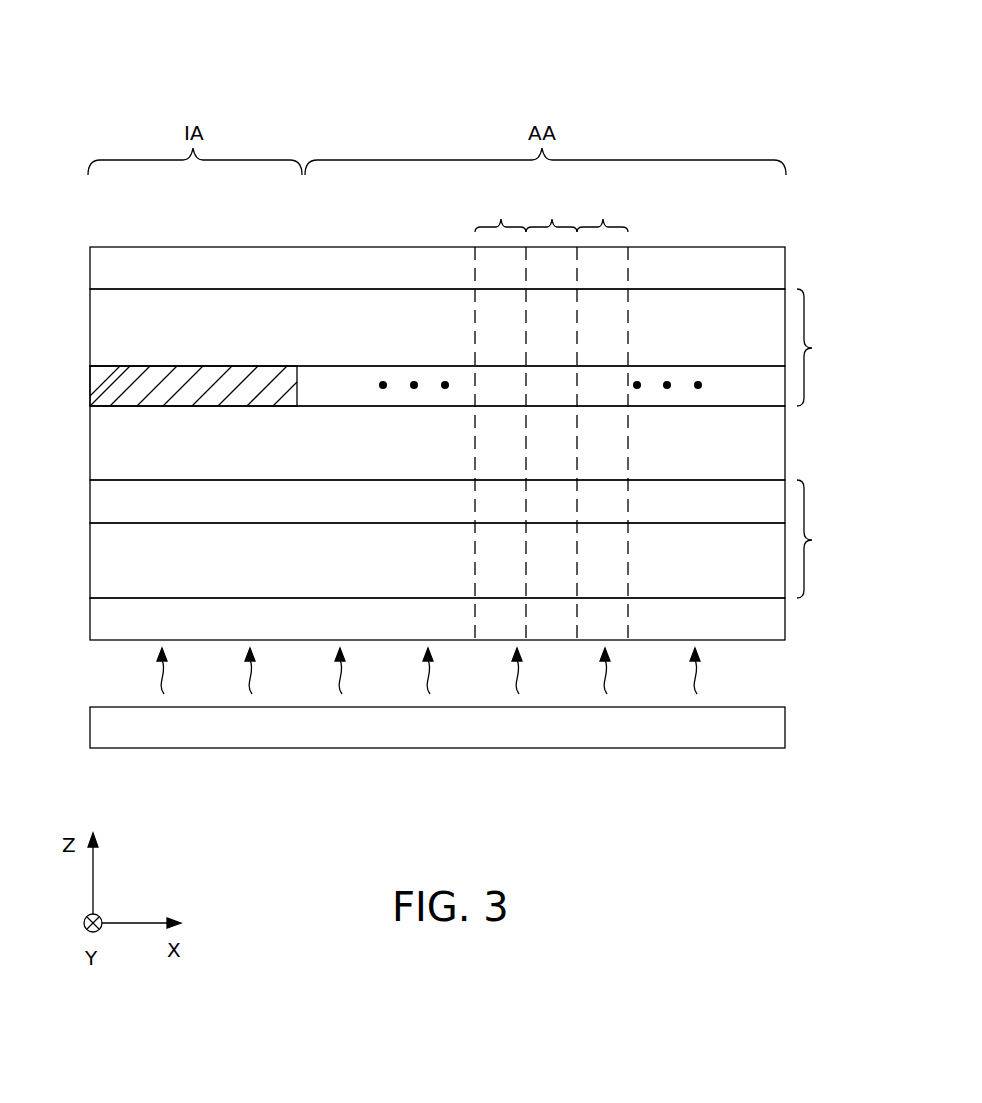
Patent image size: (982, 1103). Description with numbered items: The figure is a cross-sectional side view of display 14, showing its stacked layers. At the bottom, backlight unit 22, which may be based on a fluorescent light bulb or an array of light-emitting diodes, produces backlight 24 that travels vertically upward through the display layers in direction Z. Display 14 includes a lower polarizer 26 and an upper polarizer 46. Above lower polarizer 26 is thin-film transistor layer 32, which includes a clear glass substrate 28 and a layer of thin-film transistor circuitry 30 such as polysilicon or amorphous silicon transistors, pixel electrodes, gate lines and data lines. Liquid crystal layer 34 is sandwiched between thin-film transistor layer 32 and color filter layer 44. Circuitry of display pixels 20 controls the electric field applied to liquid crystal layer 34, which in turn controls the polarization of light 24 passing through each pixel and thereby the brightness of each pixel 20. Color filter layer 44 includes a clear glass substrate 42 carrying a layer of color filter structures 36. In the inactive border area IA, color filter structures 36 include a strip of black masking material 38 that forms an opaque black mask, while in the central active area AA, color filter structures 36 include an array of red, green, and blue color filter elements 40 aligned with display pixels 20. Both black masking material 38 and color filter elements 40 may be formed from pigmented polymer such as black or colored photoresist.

The display 14 is at (120, 54).
The display pixels 20 is at (551, 417).
The backlight unit 22 is at (99, 724).
The backlight 24 is at (152, 672).
The lower polarizer 26 is at (99, 618).
The glass substrate 28 is at (99, 556).
The thin-film transistor circuitry 30 is at (99, 501).
The thin-film transistor layer 32 is at (821, 539).
The liquid crystal layer 34 is at (99, 437).
The color filter structures 36 is at (411, 380).
The black masking material 38 is at (209, 373).
The color filter elements 40 is at (556, 398).
The glass substrate 42 is at (99, 322).
The color filter layer 44 is at (821, 347).
The upper polarizer 46 is at (774, 267).